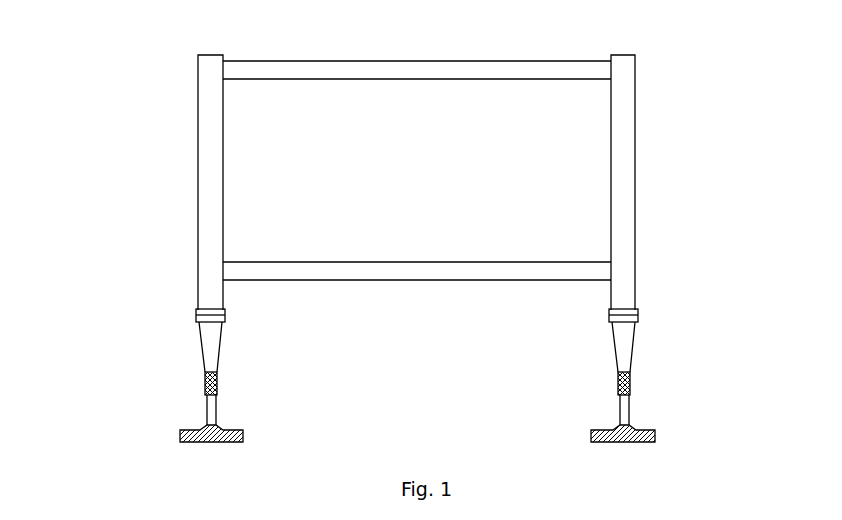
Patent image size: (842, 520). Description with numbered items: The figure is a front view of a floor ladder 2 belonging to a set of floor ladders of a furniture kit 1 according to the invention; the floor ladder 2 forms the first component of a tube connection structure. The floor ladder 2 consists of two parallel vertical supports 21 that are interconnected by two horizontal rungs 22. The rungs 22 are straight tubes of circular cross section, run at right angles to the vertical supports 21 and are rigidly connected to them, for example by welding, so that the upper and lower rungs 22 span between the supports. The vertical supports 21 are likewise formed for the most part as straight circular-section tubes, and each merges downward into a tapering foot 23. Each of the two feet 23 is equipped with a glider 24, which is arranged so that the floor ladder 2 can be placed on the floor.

The furniture kit 1 is at (180, 59).
The floor ladder 2 is at (680, 181).
The vertical support 21 is at (210, 152).
The rung 22 is at (565, 69).
The foot 23 is at (628, 331).
The glider 24 is at (198, 432).